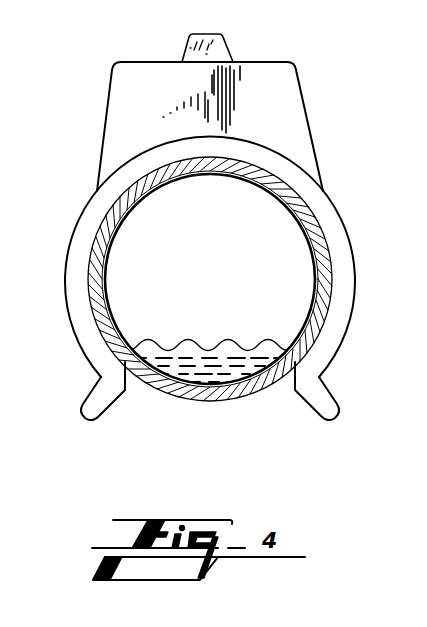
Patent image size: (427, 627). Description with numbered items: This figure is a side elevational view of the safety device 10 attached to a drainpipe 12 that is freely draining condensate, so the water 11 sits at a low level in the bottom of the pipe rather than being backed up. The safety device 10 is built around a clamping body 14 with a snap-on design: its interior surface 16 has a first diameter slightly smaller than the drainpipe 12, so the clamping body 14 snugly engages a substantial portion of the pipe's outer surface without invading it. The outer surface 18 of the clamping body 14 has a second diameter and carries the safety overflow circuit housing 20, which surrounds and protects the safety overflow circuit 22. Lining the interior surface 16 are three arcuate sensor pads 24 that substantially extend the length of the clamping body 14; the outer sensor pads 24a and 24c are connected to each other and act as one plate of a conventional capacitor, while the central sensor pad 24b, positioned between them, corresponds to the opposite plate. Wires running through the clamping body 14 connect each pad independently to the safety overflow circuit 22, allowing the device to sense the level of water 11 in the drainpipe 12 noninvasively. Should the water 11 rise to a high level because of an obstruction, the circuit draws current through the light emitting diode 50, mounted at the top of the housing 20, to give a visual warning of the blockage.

The safety device 10 is at (84, 89).
The water 11 is at (225, 378).
The drainpipe 12 is at (250, 394).
The clamping body 14 is at (86, 308).
The interior surface 16 is at (118, 400).
The outer surface 18 is at (338, 348).
The safety overflow circuit housing 20 is at (288, 88).
The safety overflow circuit 22 is at (422, 141).
The sensor pads 24 is at (419, 260).
The outer sensor pad 24a is at (322, 228).
The central sensor pad 24b is at (130, 183).
The outer sensor pad 24c is at (86, 250).
The light emitting diode 50 is at (212, 35).